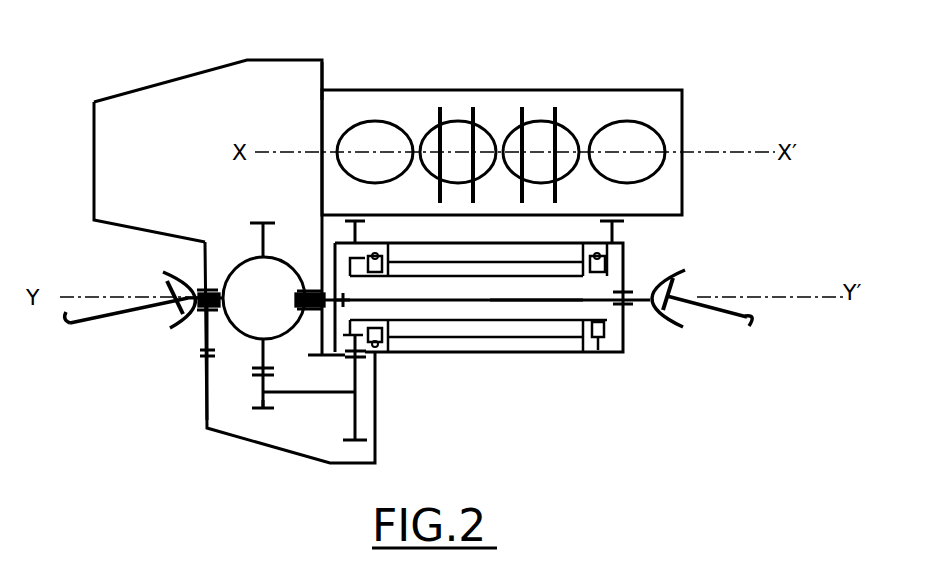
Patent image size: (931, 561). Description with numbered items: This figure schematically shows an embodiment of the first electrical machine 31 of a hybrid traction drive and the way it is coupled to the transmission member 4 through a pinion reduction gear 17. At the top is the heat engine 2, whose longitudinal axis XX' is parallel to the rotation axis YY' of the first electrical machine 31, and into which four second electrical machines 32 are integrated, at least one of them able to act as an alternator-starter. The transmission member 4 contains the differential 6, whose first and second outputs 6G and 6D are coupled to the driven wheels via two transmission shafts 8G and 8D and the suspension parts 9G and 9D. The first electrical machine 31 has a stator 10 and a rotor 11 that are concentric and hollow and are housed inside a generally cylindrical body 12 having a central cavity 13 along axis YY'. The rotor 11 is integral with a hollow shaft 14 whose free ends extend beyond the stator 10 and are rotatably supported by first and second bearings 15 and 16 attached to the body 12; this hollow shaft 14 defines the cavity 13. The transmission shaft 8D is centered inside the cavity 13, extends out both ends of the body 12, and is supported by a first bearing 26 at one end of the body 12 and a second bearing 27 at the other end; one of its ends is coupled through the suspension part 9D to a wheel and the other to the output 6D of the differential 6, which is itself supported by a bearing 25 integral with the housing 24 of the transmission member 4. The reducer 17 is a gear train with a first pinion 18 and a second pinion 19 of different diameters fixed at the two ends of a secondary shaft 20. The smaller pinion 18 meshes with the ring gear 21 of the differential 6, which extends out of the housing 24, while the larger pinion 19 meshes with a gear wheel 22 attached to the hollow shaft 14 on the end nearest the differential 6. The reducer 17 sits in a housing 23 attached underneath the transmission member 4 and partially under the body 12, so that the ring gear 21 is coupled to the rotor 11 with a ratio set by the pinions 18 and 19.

The heat engine 2 is at (601, 88).
The transmission member 4 is at (167, 80).
The differential 6 is at (224, 324).
The first output of the differential 6G is at (190, 278).
The second output of the differential 6D is at (283, 374).
The transmission shaft 8G is at (240, 293).
The transmission shaft 8D is at (502, 300).
The suspension part 9G is at (120, 310).
The suspension part 9D is at (725, 307).
The stator 10 is at (567, 343).
The rotor 11 is at (630, 277).
The body 12 is at (550, 353).
The central cavity 13 is at (470, 292).
The hollow shaft 14 is at (425, 322).
The first bearing 15 is at (378, 256).
The second bearing 16 is at (606, 264).
The pinion reduction gear 17 is at (320, 418).
The first pinion 18 is at (262, 402).
The second pinion 19 is at (358, 427).
The secondary shaft 20 is at (287, 393).
The ring gear 21 is at (262, 238).
The gear wheel 22 is at (358, 360).
The housing 23 is at (206, 384).
The housing of the transmission member 24 is at (323, 73).
The bearing 25 is at (318, 285).
The first bearing 26 is at (380, 292).
The second bearing 27 is at (632, 308).
The first electrical machine 31 is at (523, 357).
The second electrical machine 32 is at (480, 122).